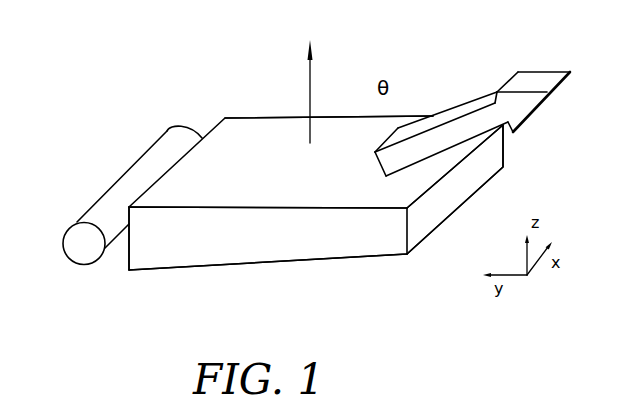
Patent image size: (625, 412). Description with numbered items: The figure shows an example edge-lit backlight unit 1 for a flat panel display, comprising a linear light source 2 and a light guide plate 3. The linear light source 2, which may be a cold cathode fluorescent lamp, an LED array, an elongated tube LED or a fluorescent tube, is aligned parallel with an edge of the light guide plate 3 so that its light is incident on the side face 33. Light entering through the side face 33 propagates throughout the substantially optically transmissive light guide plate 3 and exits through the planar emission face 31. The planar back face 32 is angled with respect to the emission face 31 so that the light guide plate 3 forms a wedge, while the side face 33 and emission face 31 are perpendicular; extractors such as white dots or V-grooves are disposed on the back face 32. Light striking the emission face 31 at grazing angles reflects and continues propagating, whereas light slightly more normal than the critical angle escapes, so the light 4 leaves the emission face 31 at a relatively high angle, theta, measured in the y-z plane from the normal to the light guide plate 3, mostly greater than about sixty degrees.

The edge-lit backlight unit 1 is at (445, 245).
The linear light source 2 is at (74, 200).
The light guide plate 3 is at (222, 100).
The emission face 31 is at (282, 133).
The back face 32 is at (302, 283).
The side face 33 is at (127, 256).
The light 4 is at (443, 104).